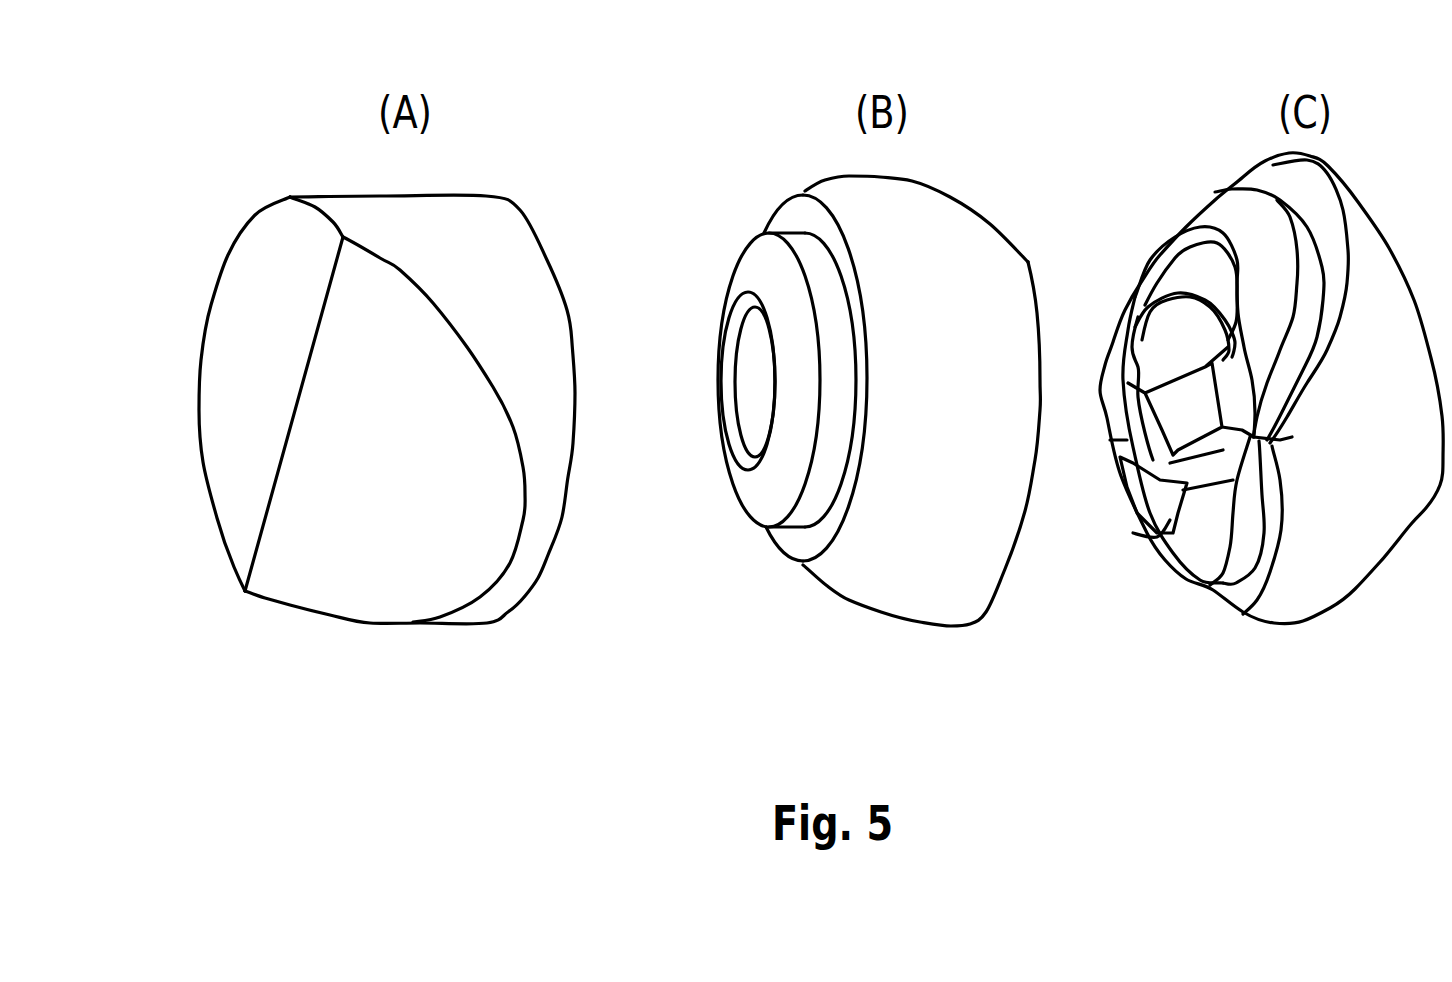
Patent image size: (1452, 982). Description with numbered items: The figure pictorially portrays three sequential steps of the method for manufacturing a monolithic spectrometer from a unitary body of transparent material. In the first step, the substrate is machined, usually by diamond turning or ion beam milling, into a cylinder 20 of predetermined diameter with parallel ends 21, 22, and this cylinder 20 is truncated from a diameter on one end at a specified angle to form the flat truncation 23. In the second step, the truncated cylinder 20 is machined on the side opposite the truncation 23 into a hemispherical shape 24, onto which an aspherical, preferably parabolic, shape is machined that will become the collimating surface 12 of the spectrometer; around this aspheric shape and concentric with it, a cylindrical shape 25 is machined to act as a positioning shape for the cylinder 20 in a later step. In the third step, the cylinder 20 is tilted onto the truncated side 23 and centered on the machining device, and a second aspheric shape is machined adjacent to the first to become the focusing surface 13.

The cylinder 20 is at (381, 409).
The end 21 is at (287, 260).
The end 22 is at (572, 344).
The truncation 23 is at (407, 517).
The hemispherical shape 24 is at (827, 481).
The cylindrical shape 25 is at (766, 279).
The collimating surface 12 is at (750, 383).
The focusing surface 13 is at (1165, 495).